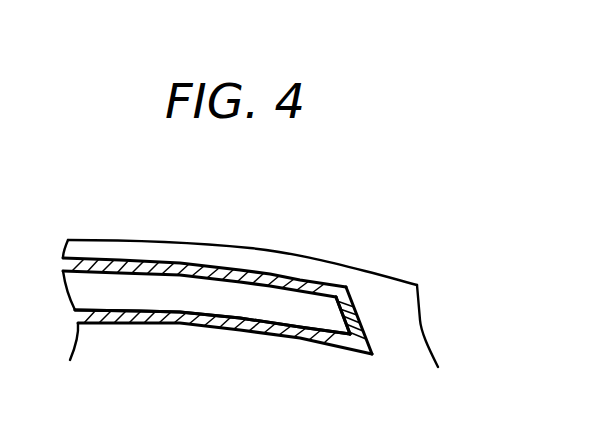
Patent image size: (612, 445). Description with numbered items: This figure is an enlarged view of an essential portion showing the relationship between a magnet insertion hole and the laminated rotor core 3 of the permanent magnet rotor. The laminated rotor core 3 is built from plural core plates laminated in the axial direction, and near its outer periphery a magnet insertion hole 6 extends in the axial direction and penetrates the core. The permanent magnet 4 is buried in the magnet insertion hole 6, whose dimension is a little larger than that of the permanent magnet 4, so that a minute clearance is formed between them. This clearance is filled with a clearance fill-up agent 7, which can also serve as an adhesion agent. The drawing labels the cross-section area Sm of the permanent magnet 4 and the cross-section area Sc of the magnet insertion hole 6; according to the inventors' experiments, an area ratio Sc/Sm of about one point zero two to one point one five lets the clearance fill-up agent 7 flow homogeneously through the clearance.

The laminated rotor core 3 is at (210, 250).
The clearance fill-up agent 7 is at (274, 273).
The magnet insertion hole 6 is at (356, 329).
The permanent magnet 4 is at (142, 292).
The cross-section area of the magnet insertion hole Sc is at (363, 331).
The cross-section area of the permanent magnet Sm is at (268, 302).